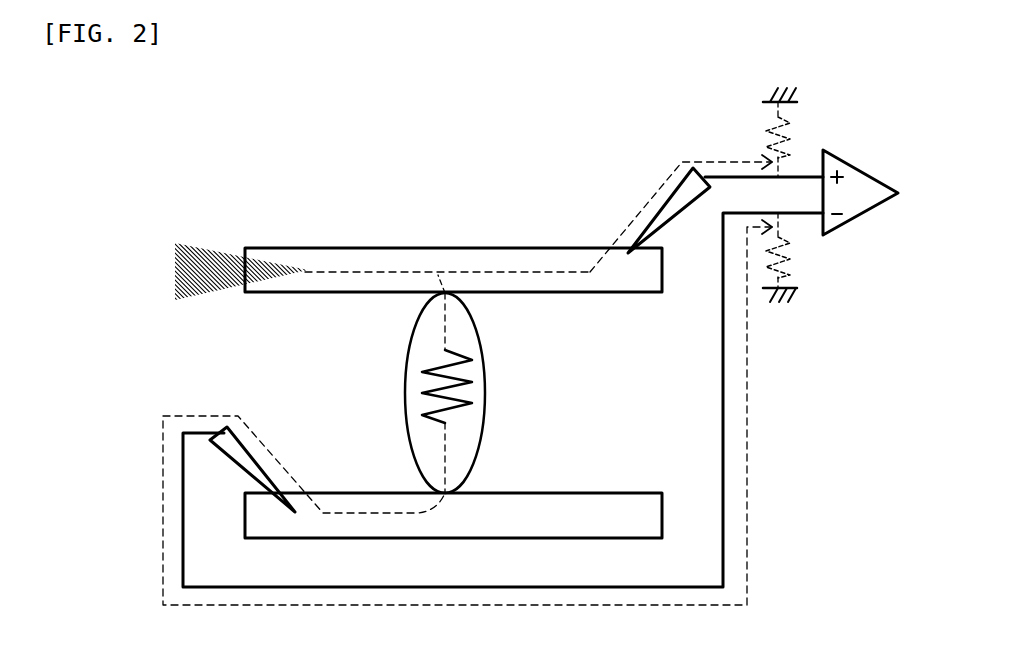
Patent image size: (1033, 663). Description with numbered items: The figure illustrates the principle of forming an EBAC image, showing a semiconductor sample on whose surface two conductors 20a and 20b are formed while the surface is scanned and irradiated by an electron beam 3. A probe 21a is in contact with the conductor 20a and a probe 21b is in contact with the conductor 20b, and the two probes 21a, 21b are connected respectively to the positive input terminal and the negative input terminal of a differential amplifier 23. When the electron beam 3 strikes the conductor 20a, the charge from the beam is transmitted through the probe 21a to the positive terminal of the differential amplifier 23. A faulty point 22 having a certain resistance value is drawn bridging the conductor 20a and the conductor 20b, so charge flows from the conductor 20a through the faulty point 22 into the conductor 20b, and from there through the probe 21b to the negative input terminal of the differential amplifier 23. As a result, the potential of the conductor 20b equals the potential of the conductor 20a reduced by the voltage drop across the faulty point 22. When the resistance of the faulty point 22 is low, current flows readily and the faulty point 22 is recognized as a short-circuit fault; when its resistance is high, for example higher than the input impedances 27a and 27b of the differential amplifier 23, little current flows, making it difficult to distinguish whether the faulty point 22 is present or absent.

The electron beam 3 is at (203, 250).
The conductor 20a is at (305, 248).
The conductor 20b is at (553, 492).
The probe 21a is at (692, 163).
The probe 21b is at (228, 430).
The faulty point 22 is at (408, 362).
The differential amplifier 23 is at (862, 173).
The input impedance 27a is at (788, 128).
The input impedance 27b is at (790, 263).